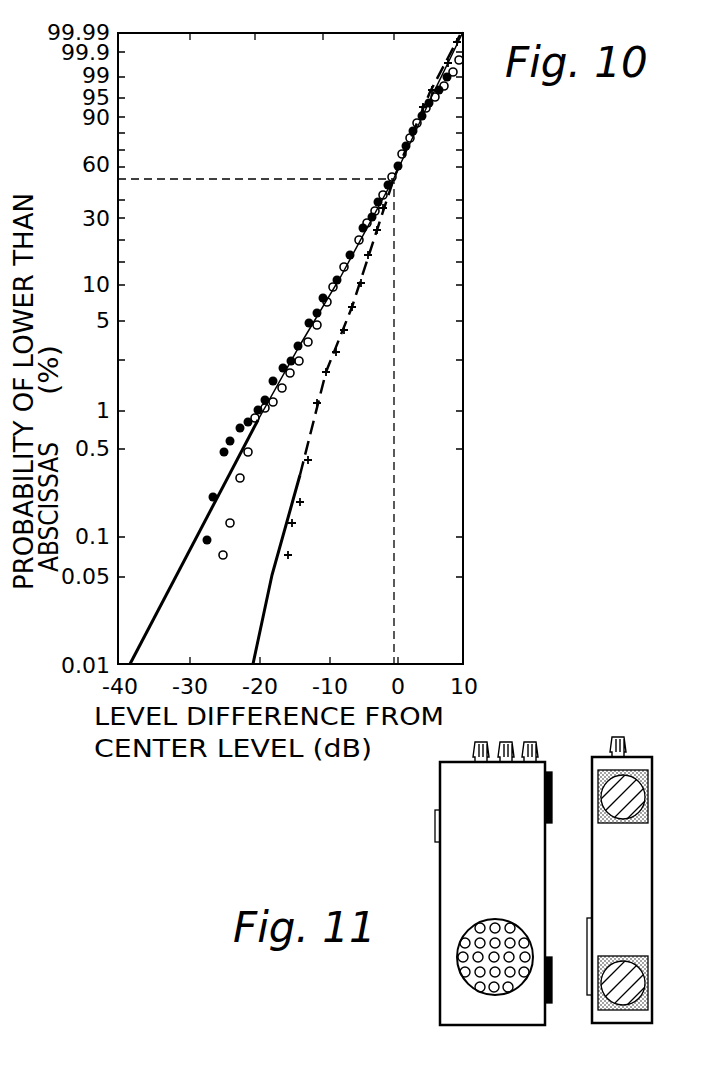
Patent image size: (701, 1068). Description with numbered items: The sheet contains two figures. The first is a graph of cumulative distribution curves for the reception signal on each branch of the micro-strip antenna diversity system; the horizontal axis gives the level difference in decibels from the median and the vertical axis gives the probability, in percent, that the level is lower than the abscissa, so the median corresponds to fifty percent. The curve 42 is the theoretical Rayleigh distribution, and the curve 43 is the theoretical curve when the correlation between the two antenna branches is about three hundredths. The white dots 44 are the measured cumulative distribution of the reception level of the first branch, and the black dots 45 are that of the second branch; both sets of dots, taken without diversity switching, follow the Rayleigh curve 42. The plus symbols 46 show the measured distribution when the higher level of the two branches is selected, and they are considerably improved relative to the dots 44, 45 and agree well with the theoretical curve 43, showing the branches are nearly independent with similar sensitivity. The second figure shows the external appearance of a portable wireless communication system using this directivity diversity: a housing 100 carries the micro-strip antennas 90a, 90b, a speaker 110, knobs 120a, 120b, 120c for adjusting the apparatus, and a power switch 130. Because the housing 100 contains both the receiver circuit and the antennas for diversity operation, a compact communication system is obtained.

In FIG. 10, the Rayleigh distribution curve 42 is at (206, 527).
In FIG. 10, the theoretical correlation curve 43 is at (270, 583).
In FIG. 10, the white dots 44 is at (232, 522).
In FIG. 10, the black dots 45 is at (240, 422).
In FIG. 10, the plus symbols 46 is at (313, 456).
In FIG. 11, the micro-strip antenna 90a is at (596, 793).
In FIG. 11, the micro-strip antenna 90b is at (595, 977).
In FIG. 11, the housing 100 is at (590, 890).
In FIG. 11, the speaker 110 is at (465, 980).
In FIG. 11, the knob 120a is at (480, 742).
In FIG. 11, the knob 120b is at (507, 742).
In FIG. 11, the knob 120c is at (533, 742).
In FIG. 11, the power switch 130 is at (436, 826).